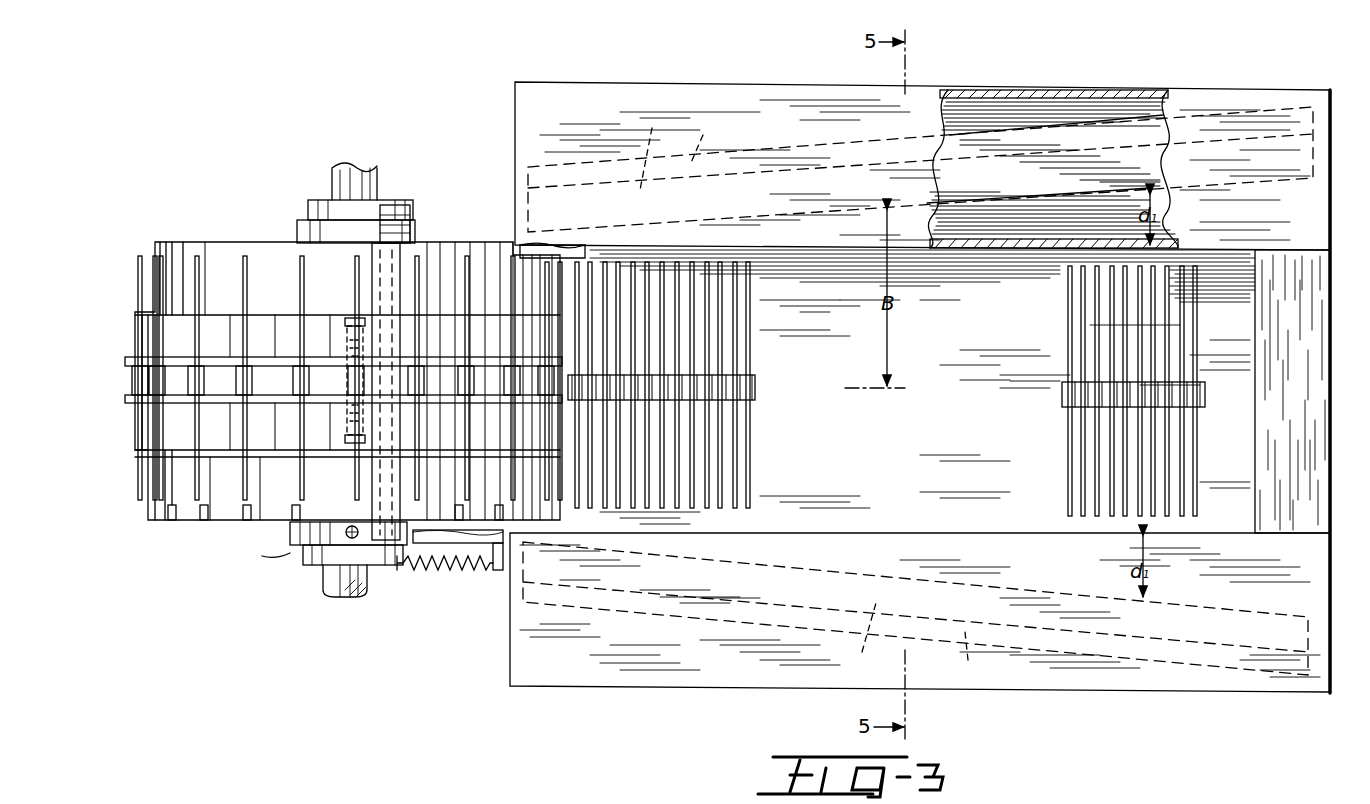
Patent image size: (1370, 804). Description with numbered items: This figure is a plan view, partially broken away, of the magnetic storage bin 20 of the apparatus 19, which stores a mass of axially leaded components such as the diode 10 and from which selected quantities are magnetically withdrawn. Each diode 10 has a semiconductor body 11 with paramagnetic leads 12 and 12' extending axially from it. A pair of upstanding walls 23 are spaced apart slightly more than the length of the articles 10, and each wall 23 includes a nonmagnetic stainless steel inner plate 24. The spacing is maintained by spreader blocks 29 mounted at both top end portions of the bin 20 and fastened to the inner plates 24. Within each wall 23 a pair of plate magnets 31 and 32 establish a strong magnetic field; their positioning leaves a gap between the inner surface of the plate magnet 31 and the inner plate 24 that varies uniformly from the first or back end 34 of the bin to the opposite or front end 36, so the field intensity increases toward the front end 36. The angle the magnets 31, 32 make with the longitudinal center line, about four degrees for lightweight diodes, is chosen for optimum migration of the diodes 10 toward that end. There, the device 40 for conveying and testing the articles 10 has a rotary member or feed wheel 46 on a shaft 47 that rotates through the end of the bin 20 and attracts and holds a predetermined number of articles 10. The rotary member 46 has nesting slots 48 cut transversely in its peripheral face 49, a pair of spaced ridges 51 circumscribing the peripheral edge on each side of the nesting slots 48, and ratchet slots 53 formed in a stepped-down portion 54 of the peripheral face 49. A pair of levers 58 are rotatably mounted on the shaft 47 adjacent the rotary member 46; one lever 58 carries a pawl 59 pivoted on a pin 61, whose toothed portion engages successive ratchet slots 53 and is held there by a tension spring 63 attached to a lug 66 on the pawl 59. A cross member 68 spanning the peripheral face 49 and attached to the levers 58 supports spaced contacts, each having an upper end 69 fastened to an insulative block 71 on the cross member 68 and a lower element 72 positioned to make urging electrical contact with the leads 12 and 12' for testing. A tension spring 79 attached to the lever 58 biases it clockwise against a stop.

The diode 10 is at (758, 415).
The semiconductor body 11 is at (130, 378).
The paramagnetic lead 12 is at (640, 386).
The paramagnetic lead 12' is at (575, 280).
The apparatus 19 is at (452, 698).
The bin 20 is at (632, 688).
The upstanding walls 23 is at (742, 82).
The inner plate 24 is at (950, 258).
The spreader blocks 29 is at (556, 250).
The plate magnet 31 is at (758, 387).
The outer plate magnet 32 is at (838, 394).
The first or back end 34 is at (1341, 275).
The front end 36 is at (488, 240).
The device for conveying and testing 40 is at (230, 240).
The rotary member 46 is at (168, 520).
The shaft 47 is at (345, 600).
The nesting slots 48 is at (268, 372).
The peripheral face 49 is at (215, 314).
The spaced ridges 51 is at (222, 372).
The ratchet slots 53 is at (205, 520).
The stepped down portion 54 is at (190, 240).
The levers 58 is at (410, 226).
The pawl 59 is at (350, 520).
The pin 61 is at (385, 214).
The tension spring 63 is at (304, 556).
The lug 66 is at (348, 530).
The cross member 68 is at (398, 246).
The upper end 69 is at (350, 318).
The block 71 is at (347, 385).
The lower element 72 is at (347, 350).
The tension spring 79 is at (465, 570).